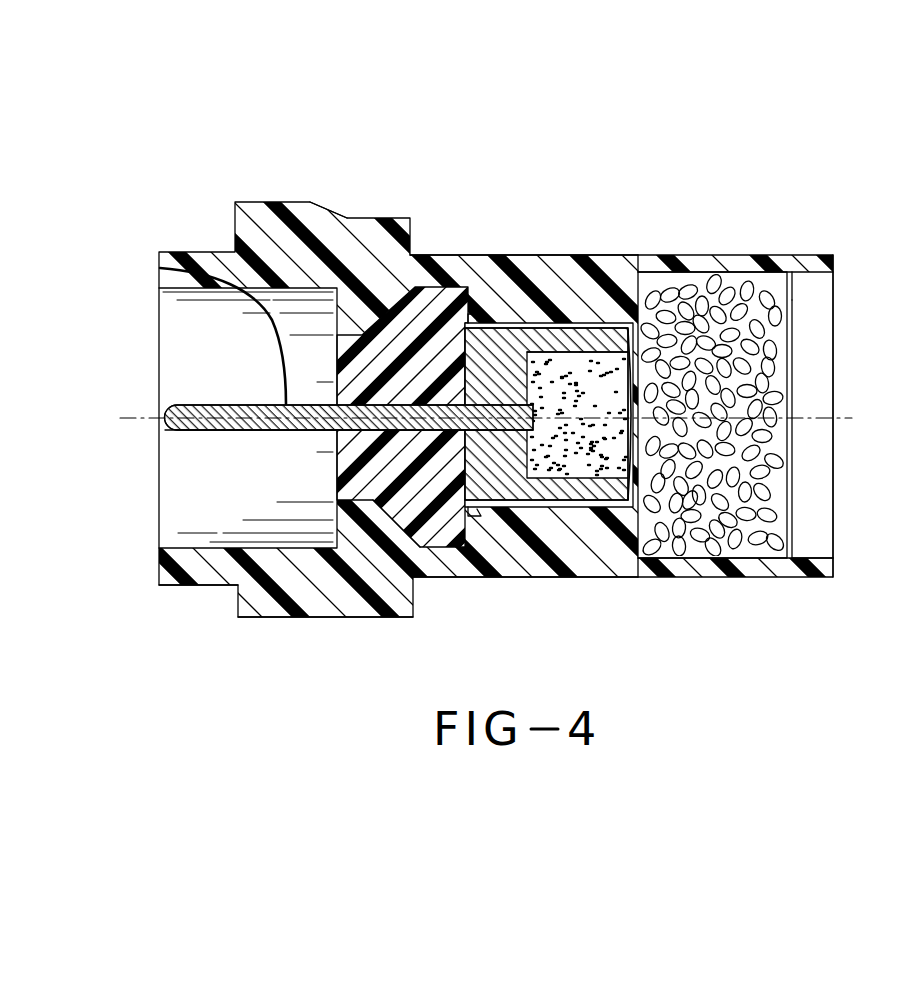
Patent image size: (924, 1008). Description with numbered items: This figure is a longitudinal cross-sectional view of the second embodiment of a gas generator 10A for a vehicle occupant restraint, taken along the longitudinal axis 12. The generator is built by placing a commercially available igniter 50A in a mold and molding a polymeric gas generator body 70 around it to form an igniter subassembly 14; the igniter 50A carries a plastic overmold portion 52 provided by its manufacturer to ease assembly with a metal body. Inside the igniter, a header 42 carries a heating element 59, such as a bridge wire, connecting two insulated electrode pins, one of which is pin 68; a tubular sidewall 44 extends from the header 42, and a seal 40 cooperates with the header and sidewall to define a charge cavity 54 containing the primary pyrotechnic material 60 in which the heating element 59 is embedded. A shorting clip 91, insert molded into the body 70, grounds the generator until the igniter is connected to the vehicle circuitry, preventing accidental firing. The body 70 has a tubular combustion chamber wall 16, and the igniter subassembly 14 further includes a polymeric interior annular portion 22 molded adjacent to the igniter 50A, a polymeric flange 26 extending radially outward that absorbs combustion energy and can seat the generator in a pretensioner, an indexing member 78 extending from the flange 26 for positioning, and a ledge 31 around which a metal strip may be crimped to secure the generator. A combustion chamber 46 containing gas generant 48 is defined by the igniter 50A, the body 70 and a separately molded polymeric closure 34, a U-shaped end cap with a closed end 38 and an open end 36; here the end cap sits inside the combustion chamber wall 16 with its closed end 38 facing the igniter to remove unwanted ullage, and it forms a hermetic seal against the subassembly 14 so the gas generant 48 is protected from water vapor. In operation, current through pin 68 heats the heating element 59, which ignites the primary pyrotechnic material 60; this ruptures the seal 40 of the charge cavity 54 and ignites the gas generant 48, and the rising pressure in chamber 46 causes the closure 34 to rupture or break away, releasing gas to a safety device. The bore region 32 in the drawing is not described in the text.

The gas generator 10A is at (478, 142).
The longitudinal axis 12 is at (195, 413).
The igniter subassembly 14 is at (263, 186).
The tubular combustion chamber wall 16 is at (788, 255).
The polymeric interior annular portion 22 is at (624, 310).
The polymeric flange 26 is at (312, 618).
The ledge 31 is at (200, 587).
The front bore 32 is at (158, 452).
The polymeric closure 34 is at (793, 302).
The open end 36 is at (833, 527).
The closed end 38 is at (795, 452).
The seal 40 is at (627, 450).
The header 42 is at (483, 458).
The tubular sidewall 44 is at (552, 492).
The combustion chamber 46 is at (753, 307).
The gas generant 48 is at (727, 525).
The igniter 50A is at (403, 307).
The plastic overmold portion 52 is at (413, 510).
The charge cavity 54 is at (588, 462).
The heating element 59 is at (553, 380).
The primary pyrotechnic material 60 is at (600, 377).
The electrode pin 68 is at (250, 430).
The polymeric gas generator body 70 is at (667, 253).
The indexing member 78 is at (315, 203).
The shorting clip 91 is at (277, 347).